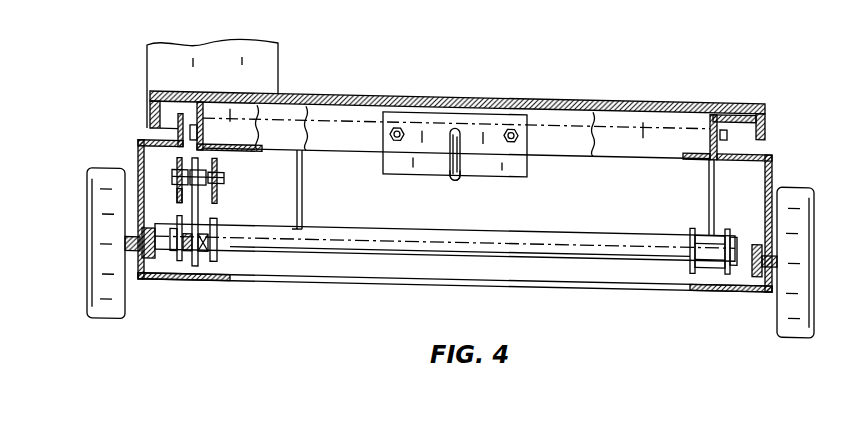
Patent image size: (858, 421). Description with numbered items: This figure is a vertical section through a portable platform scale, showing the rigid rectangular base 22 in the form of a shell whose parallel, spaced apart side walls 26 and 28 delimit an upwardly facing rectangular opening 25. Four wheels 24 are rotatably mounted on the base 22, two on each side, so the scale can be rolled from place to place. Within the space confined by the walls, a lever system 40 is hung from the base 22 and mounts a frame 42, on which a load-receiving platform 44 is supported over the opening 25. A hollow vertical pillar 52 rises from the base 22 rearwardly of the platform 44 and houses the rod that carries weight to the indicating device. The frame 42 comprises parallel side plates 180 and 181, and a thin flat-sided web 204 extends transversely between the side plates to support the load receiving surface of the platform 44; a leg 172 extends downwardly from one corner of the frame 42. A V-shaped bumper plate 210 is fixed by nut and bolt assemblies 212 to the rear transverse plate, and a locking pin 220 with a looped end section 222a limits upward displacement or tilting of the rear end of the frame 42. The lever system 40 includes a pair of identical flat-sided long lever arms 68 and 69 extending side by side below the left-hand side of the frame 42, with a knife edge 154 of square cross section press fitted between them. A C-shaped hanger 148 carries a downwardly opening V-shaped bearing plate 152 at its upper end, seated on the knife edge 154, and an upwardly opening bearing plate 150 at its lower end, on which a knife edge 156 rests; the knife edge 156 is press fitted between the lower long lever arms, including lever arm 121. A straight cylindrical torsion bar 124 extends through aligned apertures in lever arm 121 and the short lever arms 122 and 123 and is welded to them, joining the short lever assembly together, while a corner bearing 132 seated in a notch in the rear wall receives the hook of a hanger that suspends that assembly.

The base 22 is at (163, 283).
The wheels 24 is at (90, 276).
The opening 25 is at (170, 127).
The side wall 26 is at (180, 144).
The side wall 28 is at (774, 161).
The lever system 40 is at (215, 267).
The frame 42 is at (738, 126).
The load-receiving platform 44 is at (228, 92).
The pillar 52 is at (183, 78).
The long lever arm 68 is at (178, 192).
The long lever arm 69 is at (218, 162).
The long lever arm 121 is at (218, 222).
The short lever arm 122 is at (689, 269).
The short lever arm 123 is at (733, 263).
The torsion bar 124 is at (319, 229).
The corner bearing 132 is at (137, 172).
The hanger 148 is at (200, 213).
The bearing plate 150 is at (217, 255).
The bearing plate 152 is at (224, 175).
The knife edge 154 is at (176, 150).
The knife edge 156 is at (222, 238).
The leg 172 is at (716, 193).
The side plate 180 is at (160, 118).
The side plate 181 is at (740, 115).
The web 204 is at (293, 117).
The bumper plate 210 is at (521, 179).
The nut and bolt assemblies 212 is at (388, 138).
The locking pin 220 is at (445, 175).
The looped end section 222a is at (453, 176).